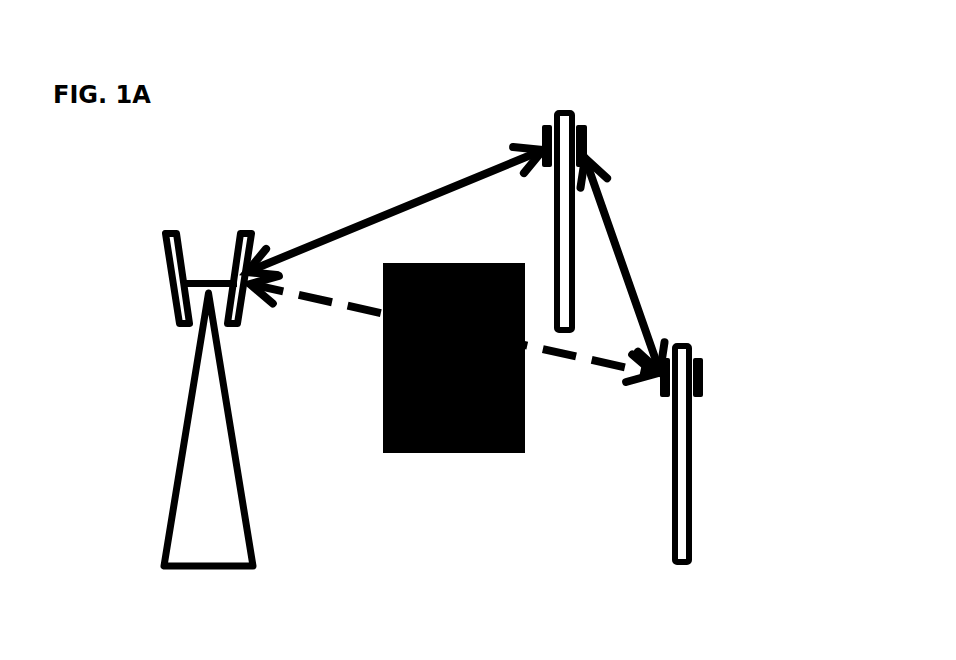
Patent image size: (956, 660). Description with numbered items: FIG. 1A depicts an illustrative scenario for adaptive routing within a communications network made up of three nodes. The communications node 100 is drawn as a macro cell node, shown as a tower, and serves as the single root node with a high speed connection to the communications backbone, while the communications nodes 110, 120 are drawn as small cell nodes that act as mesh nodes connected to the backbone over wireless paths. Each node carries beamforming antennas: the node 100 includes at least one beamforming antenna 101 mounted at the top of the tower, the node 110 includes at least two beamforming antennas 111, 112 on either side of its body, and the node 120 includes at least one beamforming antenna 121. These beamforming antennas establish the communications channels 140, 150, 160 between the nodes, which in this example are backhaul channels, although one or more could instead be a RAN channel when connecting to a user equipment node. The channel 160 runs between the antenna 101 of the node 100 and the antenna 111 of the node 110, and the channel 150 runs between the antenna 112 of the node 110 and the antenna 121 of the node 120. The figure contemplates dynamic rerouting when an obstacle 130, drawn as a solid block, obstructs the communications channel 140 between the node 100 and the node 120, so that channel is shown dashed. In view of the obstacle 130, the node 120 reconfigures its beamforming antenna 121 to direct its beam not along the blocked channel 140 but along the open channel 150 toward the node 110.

The communications node 100 is at (158, 423).
The beamforming antenna 101 is at (253, 228).
The communications node 110 is at (563, 98).
The beamforming antenna 111 is at (535, 133).
The beamforming antenna 112 is at (588, 133).
The communications node 120 is at (703, 490).
The beamforming antenna 121 is at (658, 398).
The obstacle 130 is at (450, 462).
The communications channel 140 is at (338, 320).
The communications channel 150 is at (637, 253).
The communications channel 160 is at (403, 190).